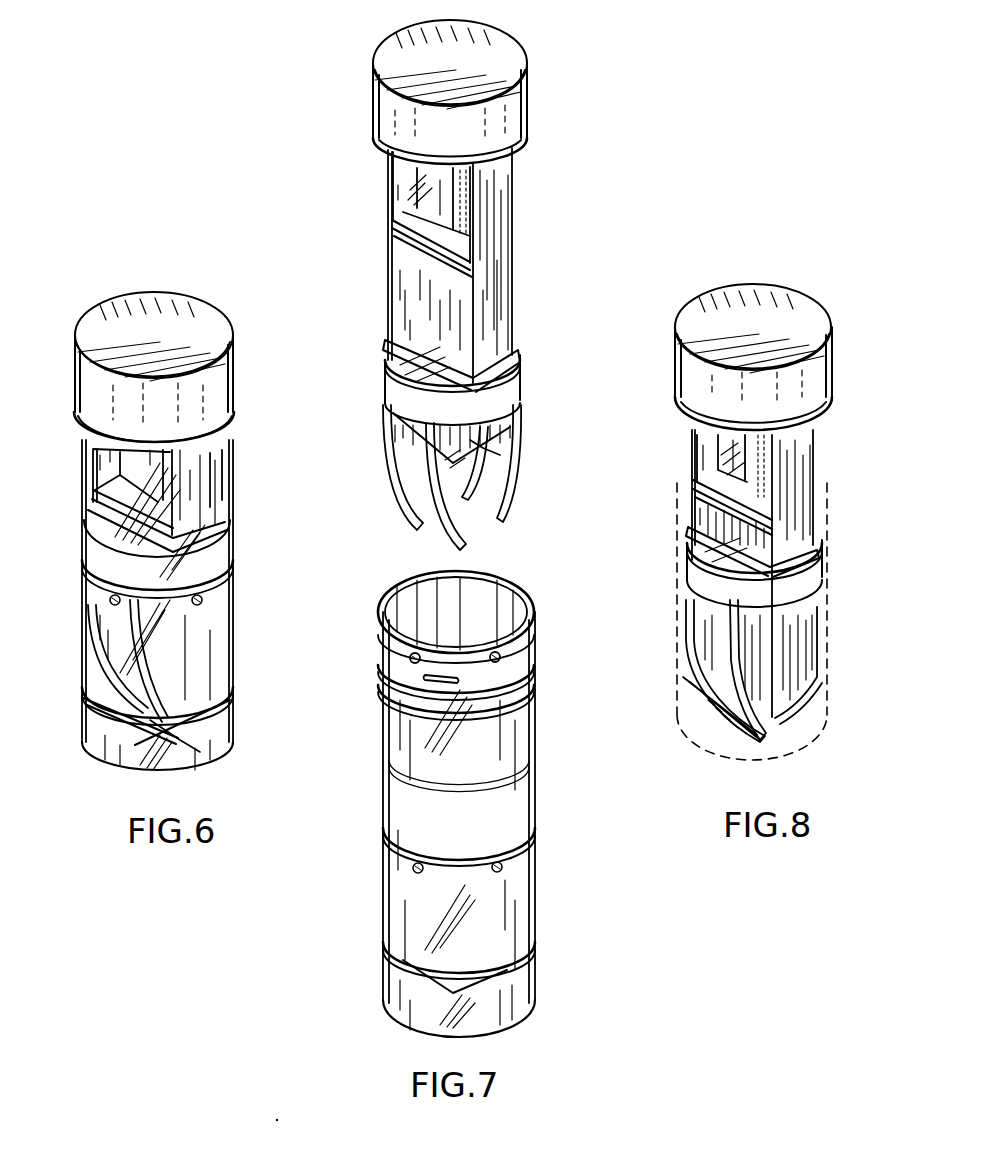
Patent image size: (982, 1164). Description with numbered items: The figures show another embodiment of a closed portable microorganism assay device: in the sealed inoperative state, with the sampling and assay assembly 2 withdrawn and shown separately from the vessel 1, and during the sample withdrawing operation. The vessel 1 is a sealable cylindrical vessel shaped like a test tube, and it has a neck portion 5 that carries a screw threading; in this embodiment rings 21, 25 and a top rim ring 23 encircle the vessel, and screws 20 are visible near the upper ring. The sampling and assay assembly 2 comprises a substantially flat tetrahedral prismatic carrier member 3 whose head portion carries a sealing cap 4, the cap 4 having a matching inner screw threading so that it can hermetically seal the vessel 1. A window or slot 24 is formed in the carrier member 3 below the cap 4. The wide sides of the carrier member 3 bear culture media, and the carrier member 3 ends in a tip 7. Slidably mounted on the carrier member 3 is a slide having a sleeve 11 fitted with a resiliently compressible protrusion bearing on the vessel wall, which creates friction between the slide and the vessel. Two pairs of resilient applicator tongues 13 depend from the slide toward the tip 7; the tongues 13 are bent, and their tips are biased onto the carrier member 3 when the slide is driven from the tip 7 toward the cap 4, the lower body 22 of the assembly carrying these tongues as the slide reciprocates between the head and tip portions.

In FIG. 7, the vessel 1 is at (382, 777).
In FIG. 7, the sampling and assay assembly 2 is at (527, 287).
In FIG. 6, the carrier member 3 is at (211, 494).
In FIG. 8, the carrier member 3 is at (708, 508).
In FIG. 6, the sealing cap 4 is at (102, 328).
In FIG. 7, the sealing cap 4 is at (387, 101).
In FIG. 8, the sealing cap 4 is at (830, 357).
In FIG. 7, the neck portion 5 is at (527, 673).
In FIG. 6, the tip 7 is at (147, 742).
In FIG. 7, the tip 7 is at (427, 441).
In FIG. 6, the sleeve 11 is at (102, 568).
In FIG. 7, the sleeve 11 is at (387, 380).
In FIG. 8, the sleeve 11 is at (803, 572).
In FIG. 6, the resilient applicator tongues 13 is at (90, 612).
In FIG. 7, the resilient applicator tongues 13 is at (388, 493).
In FIG. 8, the resilient applicator tongues 13 is at (732, 645).
In FIG. 6, the screws 20 is at (205, 600).
In FIG. 7, the screws 20 is at (500, 870).
In FIG. 6, the upper ring 21 is at (228, 566).
In FIG. 7, the upper ring 21 is at (532, 832).
In FIG. 6, the lower insert body 22 is at (200, 745).
In FIG. 7, the lower insert body 22 is at (493, 447).
In FIG. 8, the lower insert body 22 is at (797, 708).
In FIG. 7, the top rim ring 23 is at (527, 633).
In FIG. 7, the window slot 24 is at (470, 222).
In FIG. 8, the window slot 24 is at (773, 458).
In FIG. 6, the lower ring 25 is at (232, 690).
In FIG. 7, the lower ring 25 is at (532, 973).